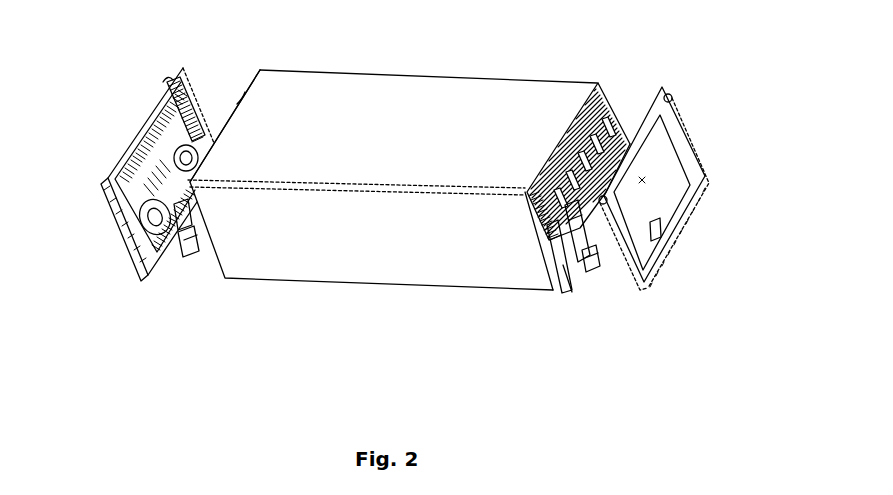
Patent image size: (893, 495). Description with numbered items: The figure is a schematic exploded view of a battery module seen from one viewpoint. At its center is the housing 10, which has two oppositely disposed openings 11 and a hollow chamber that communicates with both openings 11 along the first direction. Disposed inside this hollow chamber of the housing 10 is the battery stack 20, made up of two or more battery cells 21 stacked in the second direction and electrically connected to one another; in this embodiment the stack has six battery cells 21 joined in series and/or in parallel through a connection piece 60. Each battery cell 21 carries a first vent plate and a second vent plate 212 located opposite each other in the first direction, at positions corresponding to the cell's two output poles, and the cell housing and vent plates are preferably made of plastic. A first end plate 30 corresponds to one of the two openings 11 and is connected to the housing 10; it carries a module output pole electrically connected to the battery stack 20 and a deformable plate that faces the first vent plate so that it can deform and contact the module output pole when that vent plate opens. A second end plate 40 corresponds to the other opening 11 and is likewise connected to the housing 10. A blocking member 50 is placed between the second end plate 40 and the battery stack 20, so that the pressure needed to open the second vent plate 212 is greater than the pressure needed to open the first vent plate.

The housing 10 is at (396, 283).
The opening 11 is at (242, 74).
The battery stack 20 is at (603, 84).
The battery cell 21 is at (547, 258).
The second vent plate 212 is at (563, 274).
The first end plate 30 is at (148, 138).
The second end plate 40 is at (668, 200).
The blocking member 50 is at (584, 270).
The connection piece 60 is at (195, 259).